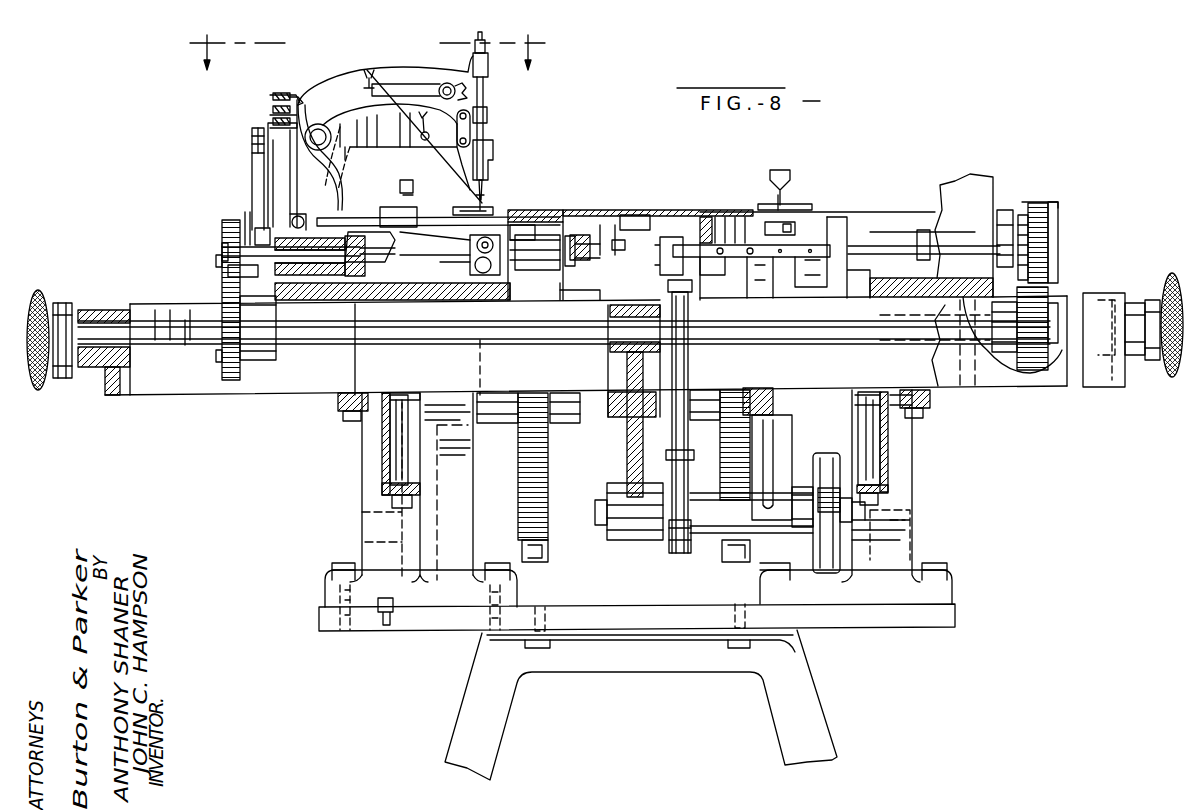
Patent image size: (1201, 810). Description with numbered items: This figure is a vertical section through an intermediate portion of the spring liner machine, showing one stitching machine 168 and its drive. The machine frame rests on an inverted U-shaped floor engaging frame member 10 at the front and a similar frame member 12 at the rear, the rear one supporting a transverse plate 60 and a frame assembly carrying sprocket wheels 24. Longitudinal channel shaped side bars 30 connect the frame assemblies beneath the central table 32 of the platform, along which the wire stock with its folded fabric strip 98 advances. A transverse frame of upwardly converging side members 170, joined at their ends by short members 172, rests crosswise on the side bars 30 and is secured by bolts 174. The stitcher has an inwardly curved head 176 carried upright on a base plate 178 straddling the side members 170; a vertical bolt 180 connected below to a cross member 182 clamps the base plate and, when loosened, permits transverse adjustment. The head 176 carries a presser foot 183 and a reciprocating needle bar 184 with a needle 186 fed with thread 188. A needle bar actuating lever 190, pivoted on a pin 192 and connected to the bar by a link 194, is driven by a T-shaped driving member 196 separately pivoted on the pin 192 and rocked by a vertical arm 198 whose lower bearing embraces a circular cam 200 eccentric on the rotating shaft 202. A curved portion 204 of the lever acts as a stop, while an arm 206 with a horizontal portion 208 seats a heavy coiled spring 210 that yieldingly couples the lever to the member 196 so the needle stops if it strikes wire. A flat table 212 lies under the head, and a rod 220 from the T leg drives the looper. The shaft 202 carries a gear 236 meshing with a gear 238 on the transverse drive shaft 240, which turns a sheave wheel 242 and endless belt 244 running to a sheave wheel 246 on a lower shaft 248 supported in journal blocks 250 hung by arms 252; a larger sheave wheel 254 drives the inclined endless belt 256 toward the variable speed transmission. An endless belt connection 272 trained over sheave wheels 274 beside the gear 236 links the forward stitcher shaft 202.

The floor engaging frame member 10 is at (368, 58).
The frame member 12 is at (800, 697).
The sprocket wheels 24 is at (545, 455).
The side bars 30 is at (382, 432).
The central platform section or table 32 is at (618, 217).
The transverse plate 60 is at (452, 620).
The fabric strip 98 is at (897, 200).
The stitching machine 168 is at (330, 70).
The side members 170 is at (1030, 378).
The short members 172 is at (122, 392).
The bolts 174 is at (400, 470).
The head 176 is at (414, 82).
The base plate 178 is at (425, 296).
The vertical bolt 180 is at (355, 352).
The cross member 182 is at (340, 402).
The presser foot 183 is at (474, 206).
The needle bar 184 is at (490, 100).
The needle 186 is at (485, 200).
The thread 188 is at (480, 192).
The needle bar actuating lever 190 is at (358, 137).
The pin 192 is at (322, 142).
The link 194 is at (470, 134).
The driving member 196 is at (298, 168).
The vertical arm 198 is at (253, 196).
The circular cam 200 is at (240, 244).
The rotating shaft 202 is at (310, 280).
The curved portion 204 is at (330, 178).
The arm 206 is at (306, 100).
The horizontal portion 208 is at (270, 96).
The coiled spring 210 is at (270, 111).
The table 212 is at (385, 218).
The rod 220 is at (395, 240).
The gear 236 is at (228, 280).
The gear 238 is at (232, 383).
The drive shaft 240 is at (490, 344).
The sheave wheel 242 is at (692, 340).
The endless belt 244 is at (684, 470).
The sheave wheel 246 is at (672, 545).
The shaft 248 is at (712, 535).
The journal blocks 250 is at (627, 535).
The arms 252 is at (637, 458).
The sheave wheel 254 is at (905, 540).
The endless belt 256 is at (835, 570).
The endless belt connection 272 is at (258, 238).
The sheave wheels 274 is at (238, 270).